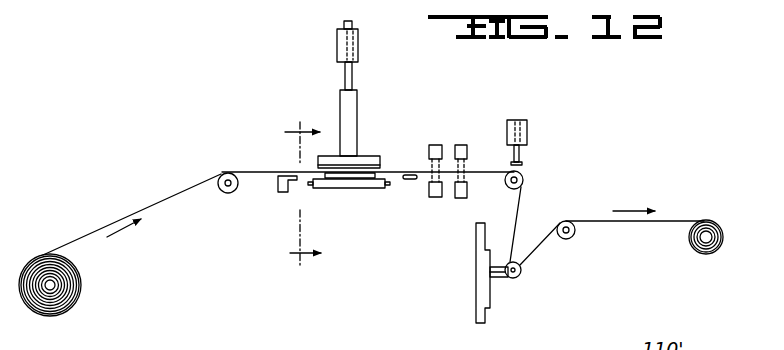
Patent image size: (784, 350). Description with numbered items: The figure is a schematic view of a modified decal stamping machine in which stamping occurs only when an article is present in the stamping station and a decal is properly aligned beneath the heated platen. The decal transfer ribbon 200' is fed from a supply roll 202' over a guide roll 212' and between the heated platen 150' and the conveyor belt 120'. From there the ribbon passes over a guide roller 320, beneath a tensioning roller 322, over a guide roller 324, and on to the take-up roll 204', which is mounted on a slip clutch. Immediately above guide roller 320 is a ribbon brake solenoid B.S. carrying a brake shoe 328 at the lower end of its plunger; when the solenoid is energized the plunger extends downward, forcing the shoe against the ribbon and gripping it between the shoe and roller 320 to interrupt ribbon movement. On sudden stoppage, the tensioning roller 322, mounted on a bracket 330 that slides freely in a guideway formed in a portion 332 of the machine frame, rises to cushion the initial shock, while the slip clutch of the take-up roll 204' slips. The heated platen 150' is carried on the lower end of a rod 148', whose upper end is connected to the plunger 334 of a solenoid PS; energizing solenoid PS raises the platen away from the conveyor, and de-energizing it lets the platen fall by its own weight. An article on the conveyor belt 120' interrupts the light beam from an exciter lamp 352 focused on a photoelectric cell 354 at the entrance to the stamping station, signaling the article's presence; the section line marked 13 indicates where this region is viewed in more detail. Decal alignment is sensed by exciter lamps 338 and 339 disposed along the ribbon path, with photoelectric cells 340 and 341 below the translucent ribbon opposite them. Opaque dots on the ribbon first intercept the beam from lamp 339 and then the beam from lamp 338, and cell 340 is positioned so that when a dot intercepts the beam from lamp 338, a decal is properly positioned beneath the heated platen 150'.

The decal transfer ribbon 200' is at (373, 218).
The supply roll 202' is at (79, 285).
The guide roll 212' is at (226, 209).
The exciter lamp 352 is at (278, 187).
The section line of FIG. 13 is at (298, 186).
The solenoid PS is at (360, 47).
The plunger 334 is at (352, 72).
The rod 148' is at (379, 123).
The heated platen 150' is at (371, 148).
The conveyor belt 120' is at (349, 197).
The photoelectric cell 354 is at (410, 180).
The exciter lamp 339 is at (435, 145).
The photoelectric cell 341 is at (435, 197).
The exciter lamp 338 is at (477, 138).
The photoelectric cell 340 is at (460, 198).
The ribbon brake solenoid B.S. is at (528, 130).
The brake shoe 328 is at (522, 163).
The guide roller 320 is at (523, 182).
The guide roller 324 is at (573, 233).
The tensioning roller 322 is at (520, 277).
The bracket 330 is at (497, 275).
The frame portion 332 is at (478, 292).
The take-up roll 204' is at (714, 256).